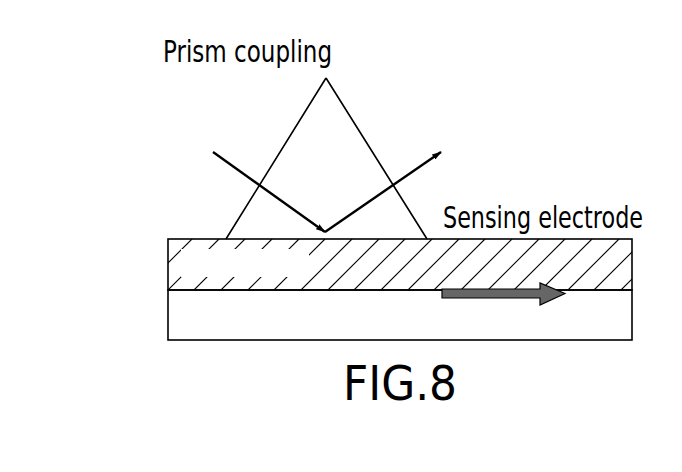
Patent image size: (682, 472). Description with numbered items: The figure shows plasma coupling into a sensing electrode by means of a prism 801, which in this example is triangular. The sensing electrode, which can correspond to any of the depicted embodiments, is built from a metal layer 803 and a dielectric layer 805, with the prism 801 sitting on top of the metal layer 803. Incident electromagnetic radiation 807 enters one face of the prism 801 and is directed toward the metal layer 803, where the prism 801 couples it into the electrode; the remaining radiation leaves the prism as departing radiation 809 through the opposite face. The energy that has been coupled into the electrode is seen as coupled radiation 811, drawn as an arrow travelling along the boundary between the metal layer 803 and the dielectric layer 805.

The prism 801 is at (340, 98).
The metal layer 803 is at (168, 265).
The dielectric layer 805 is at (168, 317).
The incident electromagnetic radiation 807 is at (224, 158).
The departing radiation 809 is at (408, 170).
The coupled radiation 811 is at (510, 299).